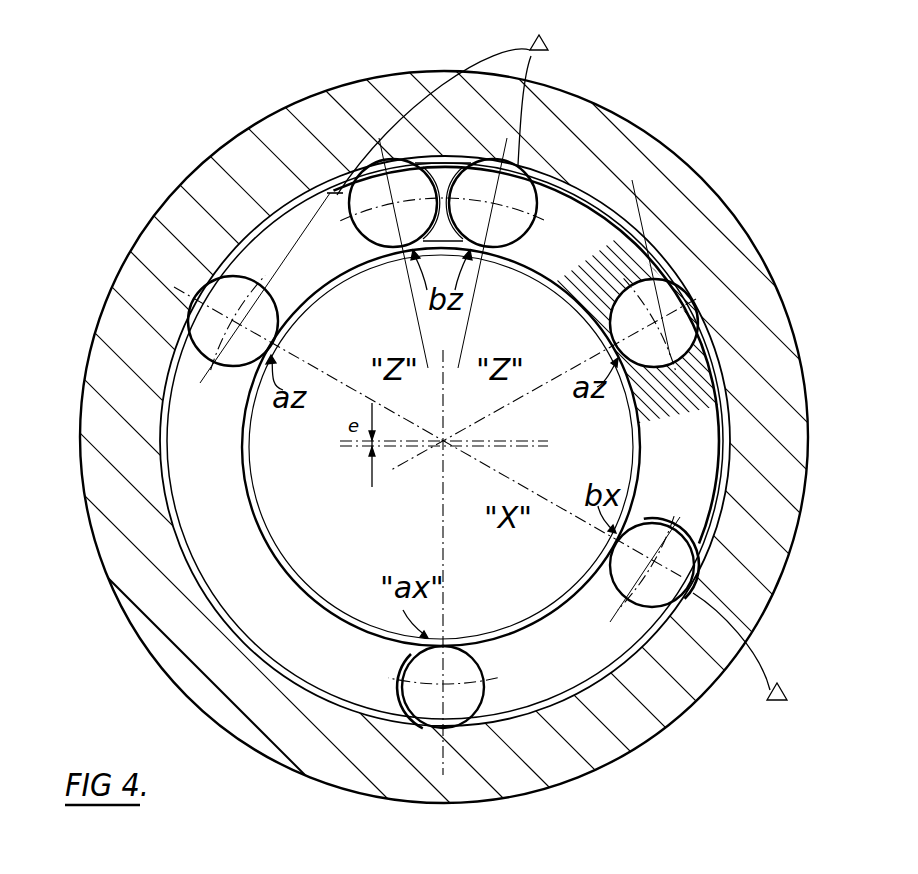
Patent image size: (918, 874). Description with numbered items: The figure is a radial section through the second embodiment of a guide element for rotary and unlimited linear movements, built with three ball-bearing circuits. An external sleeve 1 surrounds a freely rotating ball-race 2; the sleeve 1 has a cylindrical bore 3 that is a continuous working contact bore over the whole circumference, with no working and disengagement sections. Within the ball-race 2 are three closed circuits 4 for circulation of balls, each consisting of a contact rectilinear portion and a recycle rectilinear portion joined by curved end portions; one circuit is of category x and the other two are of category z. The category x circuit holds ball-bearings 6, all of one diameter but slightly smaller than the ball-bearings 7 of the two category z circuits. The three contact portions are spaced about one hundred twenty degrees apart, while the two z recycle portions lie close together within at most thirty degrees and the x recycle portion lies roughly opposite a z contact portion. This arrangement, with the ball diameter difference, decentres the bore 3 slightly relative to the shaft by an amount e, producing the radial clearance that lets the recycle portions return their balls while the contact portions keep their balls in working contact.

The external sleeve 1 is at (215, 193).
The ball-race 2 is at (593, 237).
The cylindrical bore 3 is at (657, 633).
The closed circuits for circulation of ball-bearings 4 is at (242, 270).
The ball-bearings of category x circuit 6 is at (313, 483).
The ball-bearings of category z circuits 7 is at (382, 226).